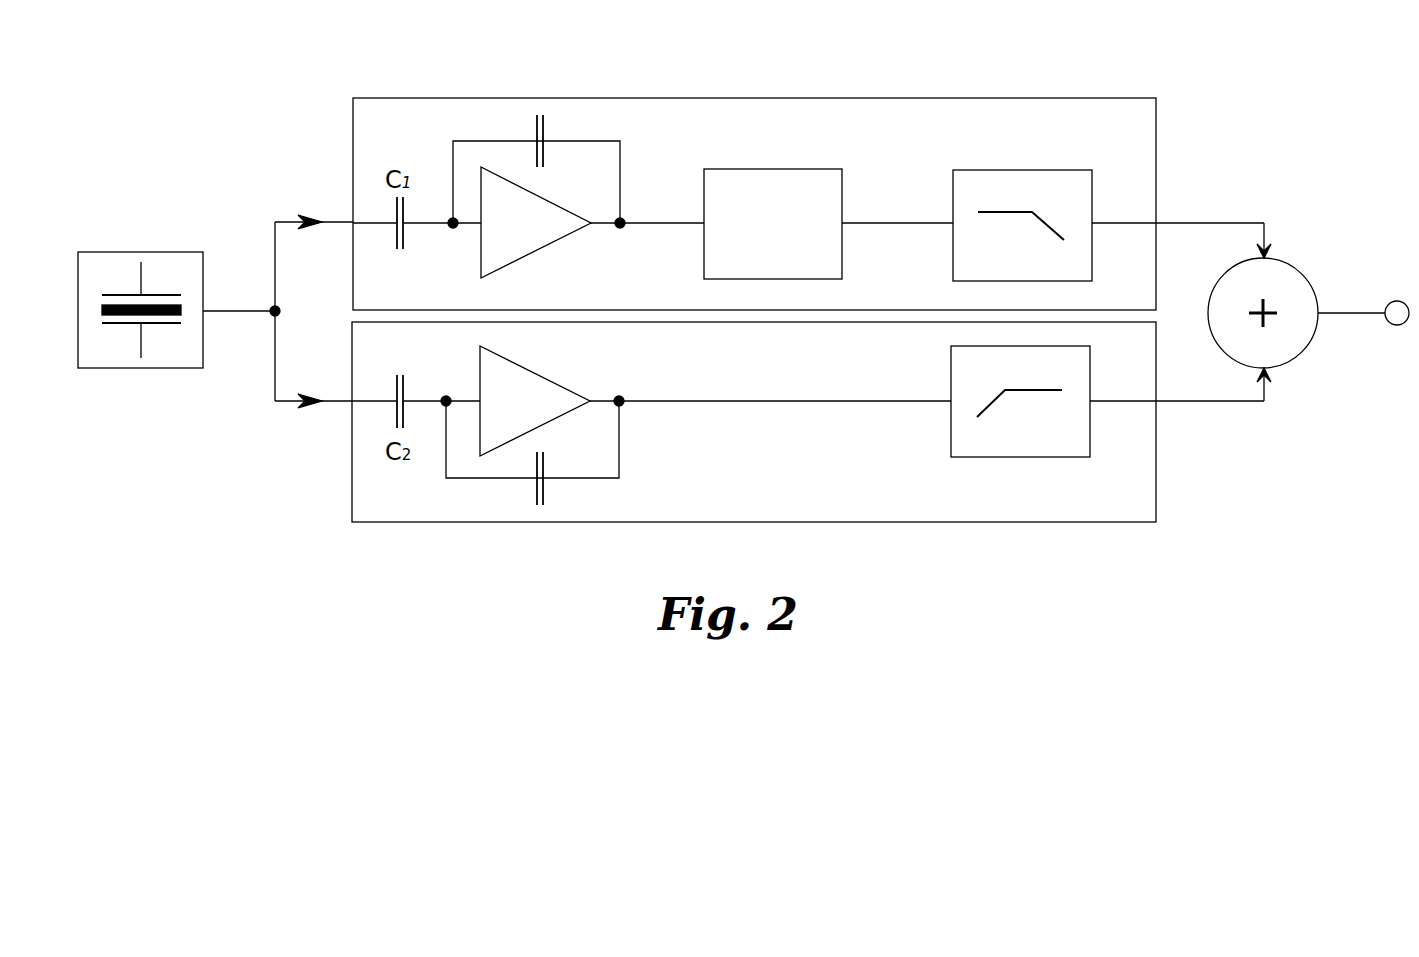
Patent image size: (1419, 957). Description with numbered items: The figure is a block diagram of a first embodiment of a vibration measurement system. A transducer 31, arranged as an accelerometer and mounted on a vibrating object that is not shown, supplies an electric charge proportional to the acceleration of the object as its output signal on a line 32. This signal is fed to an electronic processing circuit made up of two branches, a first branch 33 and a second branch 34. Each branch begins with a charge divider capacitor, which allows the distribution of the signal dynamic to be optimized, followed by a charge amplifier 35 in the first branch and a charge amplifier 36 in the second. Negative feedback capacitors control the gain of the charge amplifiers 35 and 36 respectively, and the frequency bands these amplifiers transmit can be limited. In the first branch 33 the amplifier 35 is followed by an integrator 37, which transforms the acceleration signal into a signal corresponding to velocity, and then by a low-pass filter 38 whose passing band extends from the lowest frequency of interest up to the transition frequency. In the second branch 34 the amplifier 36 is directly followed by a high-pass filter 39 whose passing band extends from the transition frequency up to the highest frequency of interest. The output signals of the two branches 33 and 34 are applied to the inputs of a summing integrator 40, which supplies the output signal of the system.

The transducer 31 is at (115, 252).
The line 32 is at (250, 311).
The first branch 33 is at (734, 98).
The second branch 34 is at (830, 522).
The charge amplifier 35 is at (550, 243).
The charge amplifier 36 is at (542, 375).
The integrator 37 is at (767, 169).
The low-pass filter 38 is at (998, 170).
The high-pass filter 39 is at (1008, 457).
The summing integrator 40 is at (1285, 363).